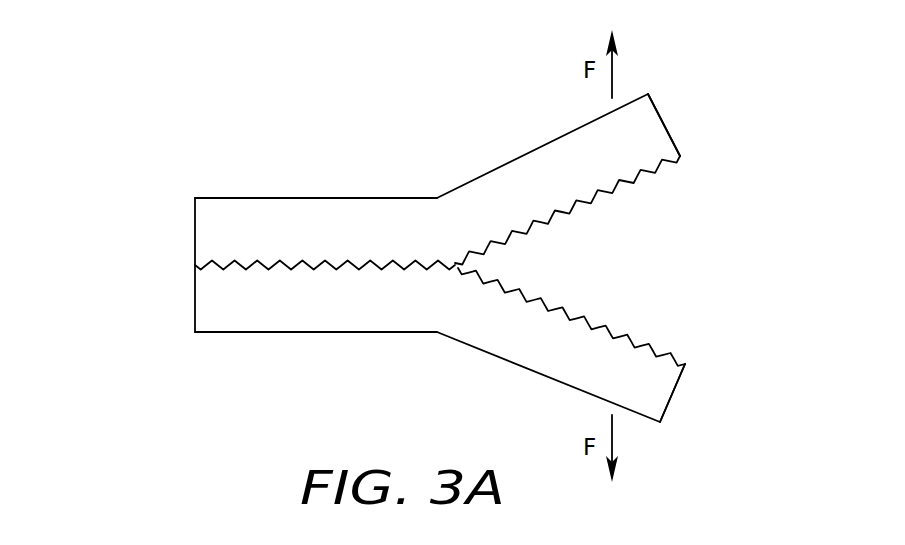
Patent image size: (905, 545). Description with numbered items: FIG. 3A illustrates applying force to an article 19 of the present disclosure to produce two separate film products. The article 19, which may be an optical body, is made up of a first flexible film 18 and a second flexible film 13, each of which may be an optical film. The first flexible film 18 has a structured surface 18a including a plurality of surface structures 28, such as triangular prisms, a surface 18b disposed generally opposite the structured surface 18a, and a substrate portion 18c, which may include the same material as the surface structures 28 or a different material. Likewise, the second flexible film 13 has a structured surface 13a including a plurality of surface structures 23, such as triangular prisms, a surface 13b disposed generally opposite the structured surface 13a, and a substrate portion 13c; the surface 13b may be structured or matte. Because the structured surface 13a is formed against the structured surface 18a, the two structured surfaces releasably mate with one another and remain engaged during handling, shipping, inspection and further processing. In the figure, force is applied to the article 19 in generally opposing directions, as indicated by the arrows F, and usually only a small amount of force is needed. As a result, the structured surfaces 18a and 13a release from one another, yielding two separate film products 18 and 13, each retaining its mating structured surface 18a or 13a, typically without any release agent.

The second flexible film 13 is at (696, 112).
The first flexible film 18 is at (701, 397).
The structured surface 13a is at (545, 218).
The structured surface 18a is at (558, 307).
The surface 13b is at (310, 198).
The surface 18b is at (285, 333).
The substrate portion 13c is at (203, 232).
The substrate portion 18c is at (210, 303).
The article 19 is at (132, 274).
The surface structures 23 is at (643, 170).
The surface structures 28 is at (643, 342).